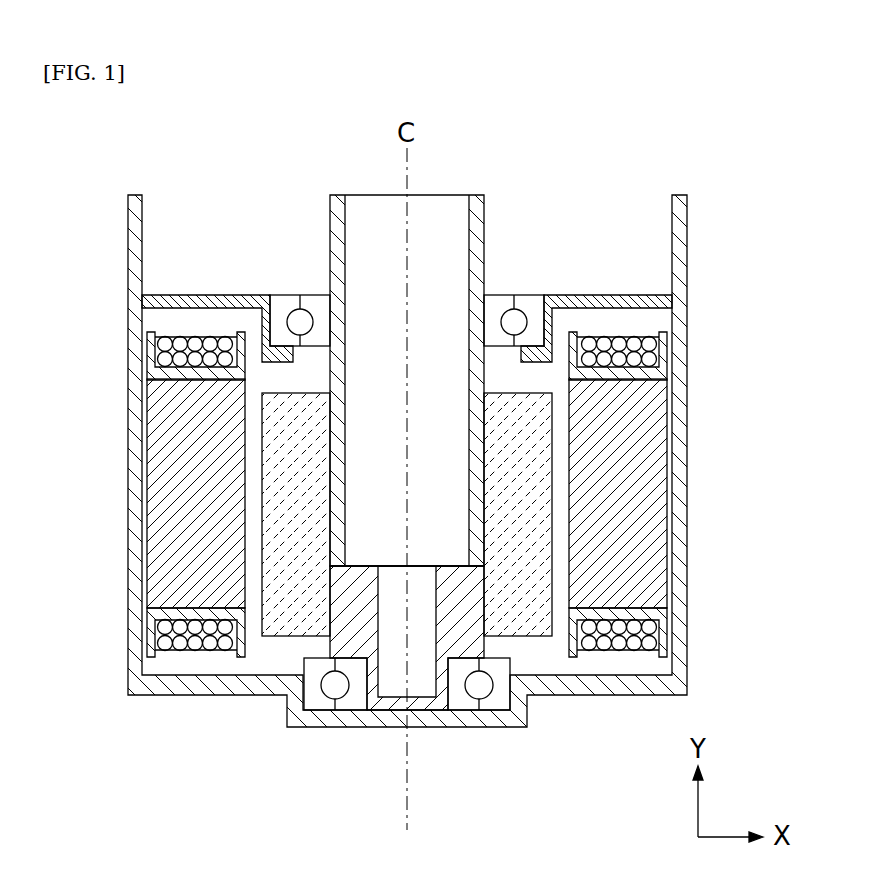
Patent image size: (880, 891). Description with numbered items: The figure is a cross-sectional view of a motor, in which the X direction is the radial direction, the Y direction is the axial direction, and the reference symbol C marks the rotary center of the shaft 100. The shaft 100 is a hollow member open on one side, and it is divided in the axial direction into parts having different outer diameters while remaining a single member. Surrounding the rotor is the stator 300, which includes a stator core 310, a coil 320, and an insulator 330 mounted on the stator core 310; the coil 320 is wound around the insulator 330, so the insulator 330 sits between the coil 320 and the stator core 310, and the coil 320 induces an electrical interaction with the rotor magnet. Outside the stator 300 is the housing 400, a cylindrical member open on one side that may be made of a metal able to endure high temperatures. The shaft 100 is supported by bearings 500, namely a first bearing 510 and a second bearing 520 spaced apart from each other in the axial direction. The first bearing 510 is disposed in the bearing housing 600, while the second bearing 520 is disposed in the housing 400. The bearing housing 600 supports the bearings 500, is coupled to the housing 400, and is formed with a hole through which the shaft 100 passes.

The shaft 100 is at (340, 465).
The stator 300 is at (502, 487).
The stator core 310 is at (660, 387).
The coil 320 is at (657, 343).
The insulator 330 is at (662, 362).
The housing 400 is at (682, 463).
The bearings 500 is at (421, 501).
The first bearing 510 is at (530, 303).
The second bearing 520 is at (497, 722).
The bearing housing 600 is at (611, 296).